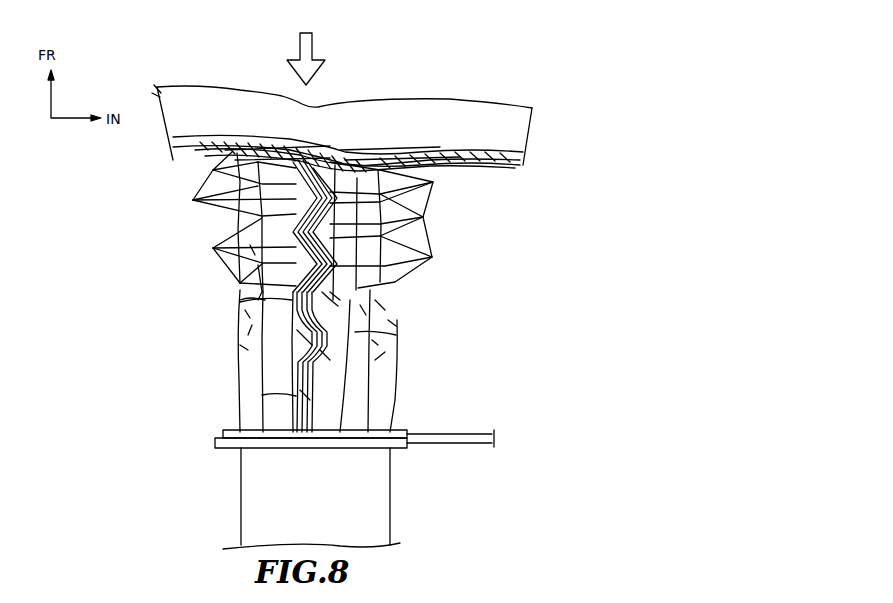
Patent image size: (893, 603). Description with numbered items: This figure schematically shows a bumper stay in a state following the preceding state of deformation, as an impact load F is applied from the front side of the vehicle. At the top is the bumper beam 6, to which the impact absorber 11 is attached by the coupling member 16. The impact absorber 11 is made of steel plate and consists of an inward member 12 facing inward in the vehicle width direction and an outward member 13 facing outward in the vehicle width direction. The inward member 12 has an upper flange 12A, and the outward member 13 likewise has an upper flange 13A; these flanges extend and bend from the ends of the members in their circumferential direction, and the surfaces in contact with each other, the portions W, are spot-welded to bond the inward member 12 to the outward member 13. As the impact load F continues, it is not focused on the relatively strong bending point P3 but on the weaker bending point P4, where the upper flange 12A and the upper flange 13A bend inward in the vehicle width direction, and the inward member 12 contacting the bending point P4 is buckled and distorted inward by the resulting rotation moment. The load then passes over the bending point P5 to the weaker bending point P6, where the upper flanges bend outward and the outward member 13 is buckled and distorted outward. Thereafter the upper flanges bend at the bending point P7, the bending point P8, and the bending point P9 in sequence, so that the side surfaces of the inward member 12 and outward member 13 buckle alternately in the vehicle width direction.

The bumper beam 6 is at (462, 97).
The impact load F is at (308, 59).
The coupling member 16 is at (520, 163).
The impact absorber 11 is at (459, 287).
The inward member 12 is at (400, 367).
The outward member 13 is at (238, 326).
The upper flange 12A is at (310, 407).
The upper flange 13A is at (298, 406).
The portions W is at (232, 182).
The bending point P3 is at (236, 212).
The bending point P4 is at (404, 202).
The bending point P5 is at (400, 240).
The bending point P6 is at (262, 276).
The bending point P7 is at (347, 297).
The bending point P8 is at (292, 346).
The bending point P9 is at (332, 393).